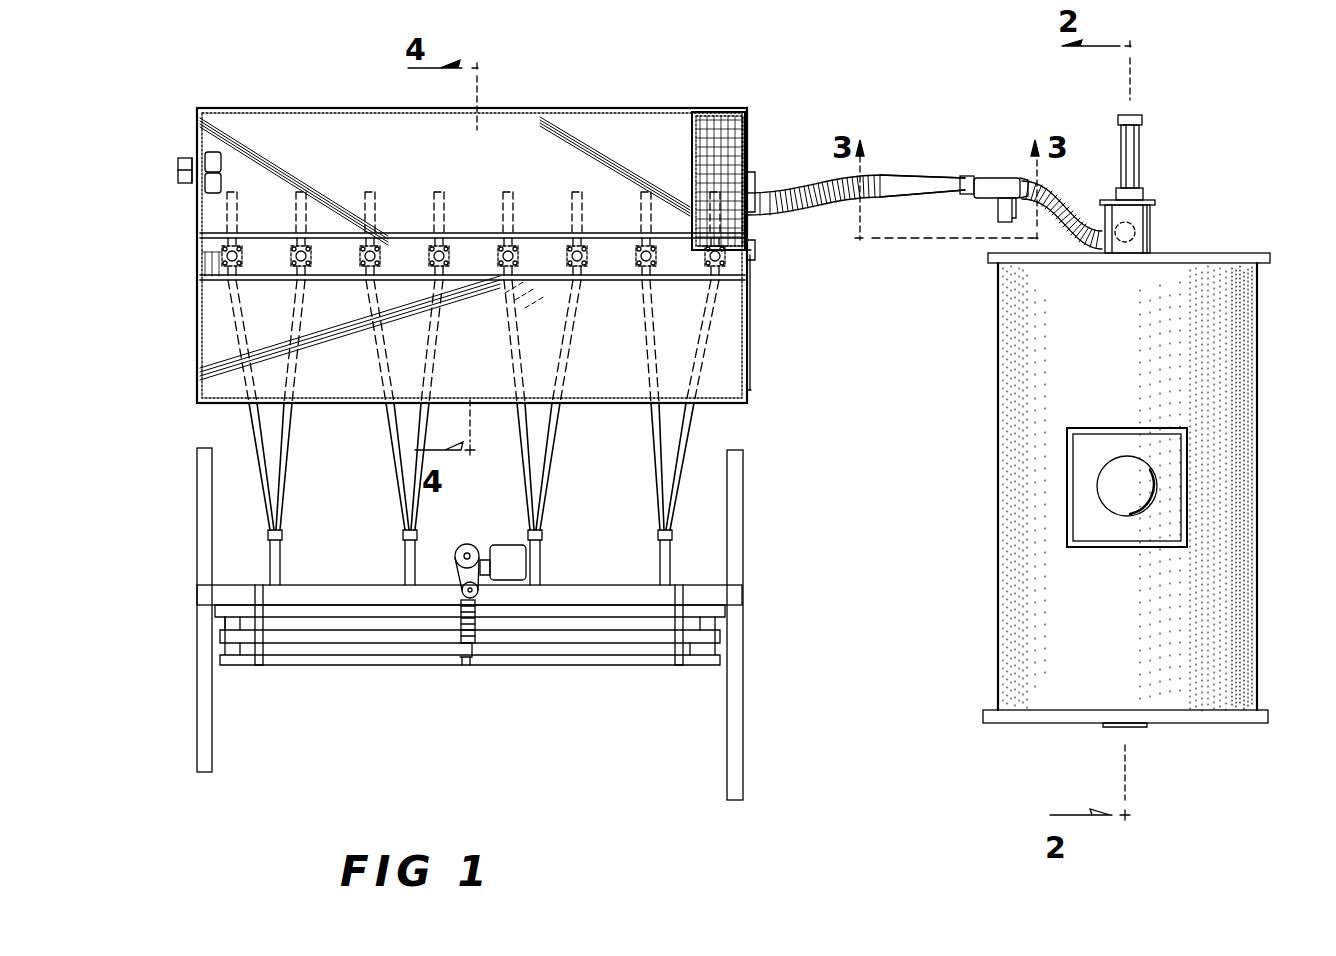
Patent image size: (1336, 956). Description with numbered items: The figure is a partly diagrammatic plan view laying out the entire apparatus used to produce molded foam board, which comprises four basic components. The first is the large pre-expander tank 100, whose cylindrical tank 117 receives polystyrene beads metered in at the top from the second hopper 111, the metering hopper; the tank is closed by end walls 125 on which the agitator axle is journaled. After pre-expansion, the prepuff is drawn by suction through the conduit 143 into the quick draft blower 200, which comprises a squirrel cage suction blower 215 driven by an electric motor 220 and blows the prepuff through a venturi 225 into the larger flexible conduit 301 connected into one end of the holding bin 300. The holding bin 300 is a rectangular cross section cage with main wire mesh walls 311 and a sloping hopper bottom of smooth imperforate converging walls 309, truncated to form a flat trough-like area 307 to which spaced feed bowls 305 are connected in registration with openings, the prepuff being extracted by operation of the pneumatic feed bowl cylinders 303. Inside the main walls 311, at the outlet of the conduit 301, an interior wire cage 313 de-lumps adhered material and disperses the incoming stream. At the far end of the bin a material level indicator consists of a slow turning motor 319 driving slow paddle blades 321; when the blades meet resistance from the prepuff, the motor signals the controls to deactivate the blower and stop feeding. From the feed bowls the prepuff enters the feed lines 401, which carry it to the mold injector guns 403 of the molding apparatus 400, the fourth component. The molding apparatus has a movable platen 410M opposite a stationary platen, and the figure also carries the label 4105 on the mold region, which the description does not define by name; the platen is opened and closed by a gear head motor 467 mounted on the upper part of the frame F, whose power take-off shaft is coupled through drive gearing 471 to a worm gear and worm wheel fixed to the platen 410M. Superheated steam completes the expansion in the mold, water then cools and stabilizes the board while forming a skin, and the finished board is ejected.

The pre-expander tank 100 is at (1260, 392).
The second hopper 111 is at (1110, 548).
The cylindrical tank 117 is at (996, 388).
The tank end walls 125 is at (1198, 258).
The conduit 143 is at (1046, 196).
The quick draft blower 200 is at (1016, 176).
The squirrel cage suction blower 215 is at (984, 198).
The electric motor 220 is at (994, 216).
The venturi 225 is at (900, 180).
The holding bin 300 is at (692, 106).
The flexible conduit 301 is at (790, 210).
The pneumatic feed bowl cylinders 303 is at (564, 202).
The feed bowls 305 is at (470, 222).
The flat trough-like area 307 is at (597, 257).
The converging walls 309 is at (420, 164).
The wire mesh walls 311 is at (382, 108).
The interior wire cage 313 is at (736, 160).
The slow turning motor 319 is at (180, 166).
The slow paddle blades 321 is at (218, 166).
The molding apparatus 400 is at (745, 560).
The feed lines 401 is at (674, 450).
The mold injector guns 403 is at (284, 566).
The shaft 4105 is at (612, 610).
The movable platen 410M is at (545, 655).
The gear head motor 467 is at (505, 545).
The drive gearing 471 is at (463, 546).
The frame F is at (196, 701).